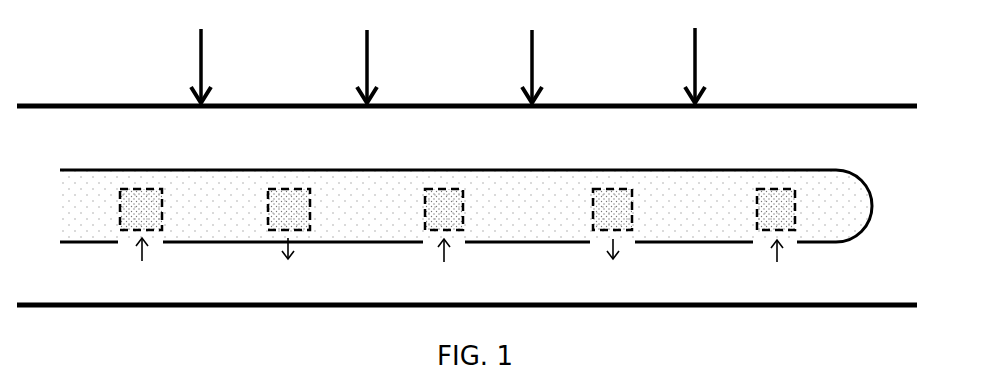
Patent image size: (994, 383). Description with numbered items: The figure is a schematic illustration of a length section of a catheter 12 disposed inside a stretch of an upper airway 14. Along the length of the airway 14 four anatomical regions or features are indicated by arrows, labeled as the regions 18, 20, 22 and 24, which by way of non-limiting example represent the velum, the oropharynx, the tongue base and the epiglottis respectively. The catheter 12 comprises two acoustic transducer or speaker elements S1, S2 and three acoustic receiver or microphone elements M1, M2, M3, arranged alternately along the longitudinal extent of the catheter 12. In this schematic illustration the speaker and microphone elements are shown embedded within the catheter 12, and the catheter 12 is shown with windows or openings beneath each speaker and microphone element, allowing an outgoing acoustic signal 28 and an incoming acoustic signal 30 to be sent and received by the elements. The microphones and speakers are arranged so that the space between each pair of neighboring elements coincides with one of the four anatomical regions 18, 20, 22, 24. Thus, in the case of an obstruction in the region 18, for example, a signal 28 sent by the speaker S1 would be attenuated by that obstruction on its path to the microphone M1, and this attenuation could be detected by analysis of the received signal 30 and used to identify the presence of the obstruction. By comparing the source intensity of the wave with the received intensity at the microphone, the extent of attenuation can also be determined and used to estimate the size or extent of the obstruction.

The catheter 12 is at (845, 195).
The upper airway 14 is at (802, 103).
The anatomical region (velum) 18 is at (200, 53).
The anatomical region (oropharynx) 20 is at (366, 53).
The anatomical region (tongue base) 22 is at (531, 53).
The anatomical region (epiglottis) 24 is at (694, 53).
The outgoing acoustic signal 28 is at (282, 250).
The incoming acoustic signal 30 is at (138, 252).
The acoustic receiver element M1 is at (163, 212).
The acoustic transducer element S1 is at (310, 208).
The acoustic receiver element M2 is at (463, 212).
The acoustic transducer element S2 is at (632, 212).
The acoustic receiver element M3 is at (795, 210).